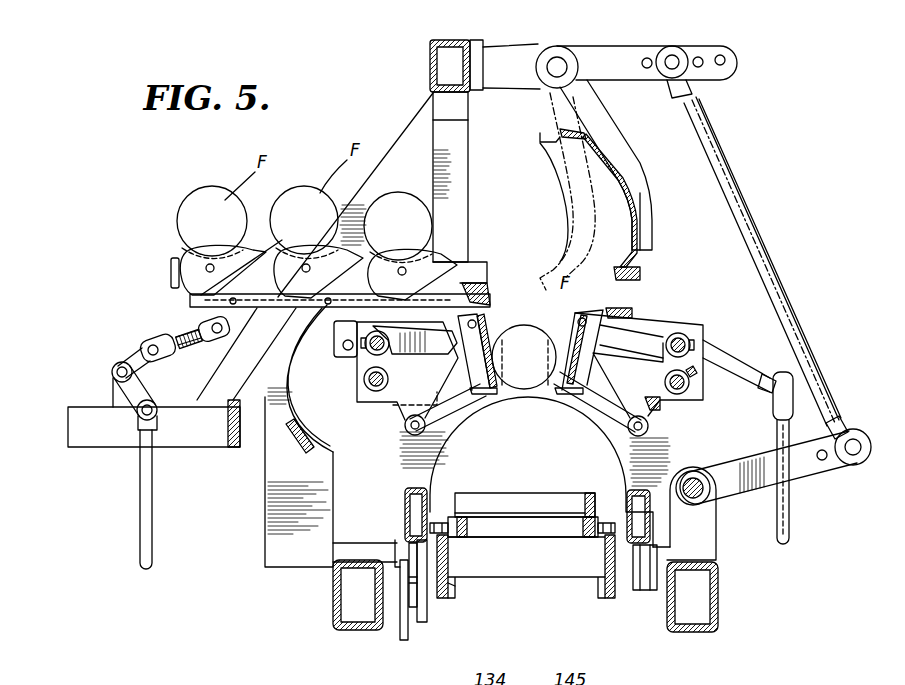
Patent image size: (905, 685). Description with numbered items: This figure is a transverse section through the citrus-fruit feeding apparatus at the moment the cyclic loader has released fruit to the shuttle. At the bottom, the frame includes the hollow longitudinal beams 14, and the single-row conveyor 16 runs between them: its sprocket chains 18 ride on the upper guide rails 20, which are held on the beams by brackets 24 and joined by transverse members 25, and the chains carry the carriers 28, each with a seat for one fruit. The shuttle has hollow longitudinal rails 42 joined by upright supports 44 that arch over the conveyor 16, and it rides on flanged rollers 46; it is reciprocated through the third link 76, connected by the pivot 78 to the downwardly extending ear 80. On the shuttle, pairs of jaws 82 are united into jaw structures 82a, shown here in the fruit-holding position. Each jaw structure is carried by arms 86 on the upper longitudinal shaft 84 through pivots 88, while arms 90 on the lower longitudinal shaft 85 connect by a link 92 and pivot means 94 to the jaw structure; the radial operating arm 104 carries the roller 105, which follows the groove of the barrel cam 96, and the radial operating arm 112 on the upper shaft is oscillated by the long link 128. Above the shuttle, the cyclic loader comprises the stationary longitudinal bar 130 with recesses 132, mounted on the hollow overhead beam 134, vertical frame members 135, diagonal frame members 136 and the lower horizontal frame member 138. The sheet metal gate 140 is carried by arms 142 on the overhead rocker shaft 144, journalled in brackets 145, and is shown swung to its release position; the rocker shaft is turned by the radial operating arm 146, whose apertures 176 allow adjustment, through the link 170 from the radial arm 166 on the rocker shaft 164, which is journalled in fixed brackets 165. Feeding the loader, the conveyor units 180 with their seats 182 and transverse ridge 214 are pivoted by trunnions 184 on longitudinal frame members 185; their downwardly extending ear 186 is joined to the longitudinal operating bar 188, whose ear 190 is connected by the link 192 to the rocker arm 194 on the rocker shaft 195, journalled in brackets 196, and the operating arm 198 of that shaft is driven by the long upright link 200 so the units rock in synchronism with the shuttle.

The hollow longitudinal beams 14 is at (355, 632).
The single-row conveyor 16 is at (522, 537).
The sprocket chains 18 is at (458, 520).
The upper guide rails 20 is at (445, 583).
The brackets 24 is at (625, 598).
The transverse members 25 is at (530, 580).
The carriers 28 is at (555, 522).
The hollow longitudinal rails 42 is at (404, 516).
The upright supports 44 is at (656, 447).
The flanged rollers 46 is at (645, 592).
The third link 76 is at (400, 640).
The pivot 78 is at (425, 622).
The downwardly extending ear 80 is at (428, 600).
The jaws 82 is at (534, 390).
The jaw structure 82a is at (493, 309).
The upper longitudinal shaft 84 is at (364, 347).
The lower longitudinal shaft 85 is at (364, 381).
The arms 86 is at (418, 345).
The pivots 88 is at (620, 308).
The arms 90 is at (388, 440).
The link 92 is at (448, 410).
The pivot means 94 is at (486, 400).
The barrel cam 96 is at (280, 425).
The radial operating arm 104 is at (340, 418).
The roller 105 is at (297, 452).
The radial operating arm 112 is at (727, 354).
The long link 128 is at (793, 527).
The longitudinal bar 130 is at (491, 292).
The recesses 132 is at (486, 262).
The hollow overhead beam 134 is at (447, 42).
The vertical frame members 135 is at (460, 134).
The diagonal frame members 136 is at (400, 152).
The lower horizontal frame member 138 is at (112, 440).
The sheet metal gate 140 is at (635, 192).
The arms 142 is at (607, 120).
The overhead rocker shaft 144 is at (577, 50).
The brackets 145 is at (513, 43).
The radial operating arm 146 is at (632, 52).
The rocker shaft 164 is at (706, 497).
The fixed brackets 165 is at (715, 530).
The radial arm 166 is at (800, 480).
The link 170 is at (726, 162).
The apertures 176 is at (724, 56).
The conveyor units 180 is at (440, 250).
The seats 182 is at (340, 205).
The trunnions 184 is at (180, 262).
The longitudinal frame members 185 is at (410, 246).
The downwardly extending ear 186 is at (222, 284).
The longitudinal operating bar 188 is at (304, 220).
The downwardly extending ear 190 is at (215, 310).
The link 192 is at (203, 322).
The rocker arm 194 is at (143, 353).
The rocker shaft 195 is at (113, 370).
The brackets 196 is at (110, 398).
The operating arm 198 is at (130, 382).
The long upright link 200 is at (142, 520).
The transverse ridge 214 is at (200, 255).